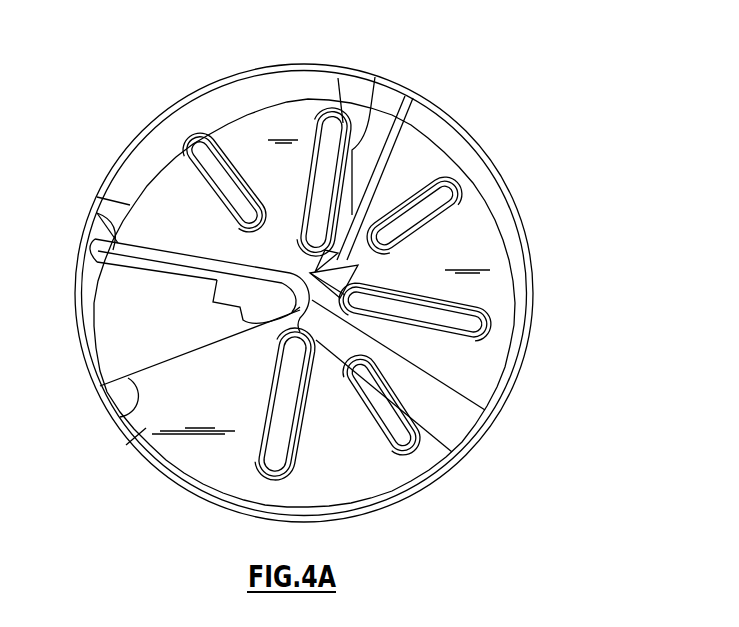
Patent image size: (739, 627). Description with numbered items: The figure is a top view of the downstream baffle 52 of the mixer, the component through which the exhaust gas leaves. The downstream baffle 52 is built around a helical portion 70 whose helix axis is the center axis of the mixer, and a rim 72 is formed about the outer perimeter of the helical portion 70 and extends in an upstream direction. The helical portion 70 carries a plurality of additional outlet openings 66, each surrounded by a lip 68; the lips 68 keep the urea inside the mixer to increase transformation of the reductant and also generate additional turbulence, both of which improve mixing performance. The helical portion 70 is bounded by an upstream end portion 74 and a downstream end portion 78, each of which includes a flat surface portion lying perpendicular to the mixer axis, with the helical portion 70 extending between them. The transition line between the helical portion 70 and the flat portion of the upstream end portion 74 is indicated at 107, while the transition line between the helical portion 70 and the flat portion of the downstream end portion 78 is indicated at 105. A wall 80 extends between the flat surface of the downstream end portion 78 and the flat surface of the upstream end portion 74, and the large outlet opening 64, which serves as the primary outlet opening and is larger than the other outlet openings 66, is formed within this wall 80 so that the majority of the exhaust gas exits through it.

The downstream baffle 52 is at (558, 43).
The large outlet opening 64 is at (97, 213).
The additional outlet openings 66 is at (325, 112).
The lips 68 is at (371, 112).
The helical portion 70 is at (146, 428).
The rim 72 is at (480, 148).
The upstream end portion 74 is at (110, 318).
The downstream end portion 78 is at (160, 193).
The wall 80 is at (90, 248).
The transition line 105 is at (362, 215).
The transition line 107 is at (127, 430).